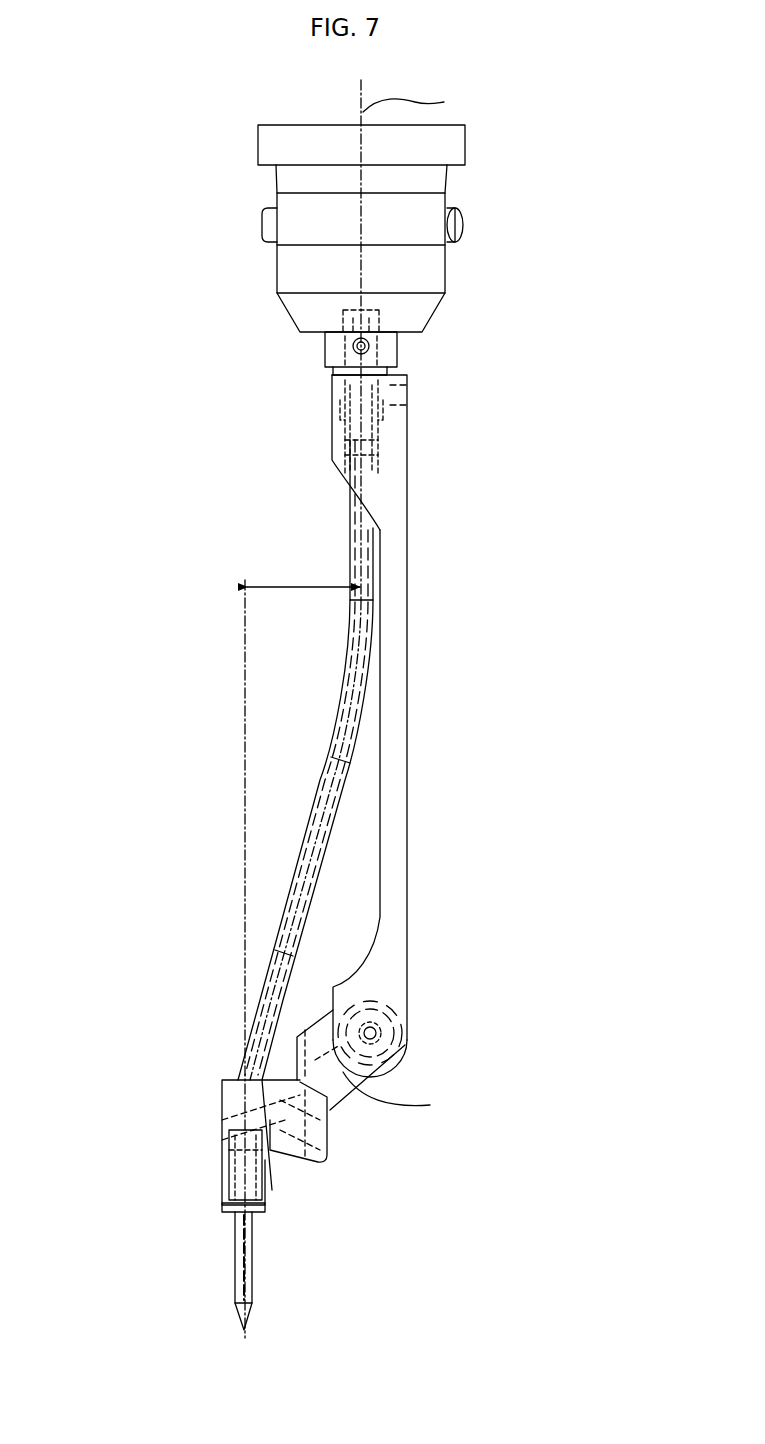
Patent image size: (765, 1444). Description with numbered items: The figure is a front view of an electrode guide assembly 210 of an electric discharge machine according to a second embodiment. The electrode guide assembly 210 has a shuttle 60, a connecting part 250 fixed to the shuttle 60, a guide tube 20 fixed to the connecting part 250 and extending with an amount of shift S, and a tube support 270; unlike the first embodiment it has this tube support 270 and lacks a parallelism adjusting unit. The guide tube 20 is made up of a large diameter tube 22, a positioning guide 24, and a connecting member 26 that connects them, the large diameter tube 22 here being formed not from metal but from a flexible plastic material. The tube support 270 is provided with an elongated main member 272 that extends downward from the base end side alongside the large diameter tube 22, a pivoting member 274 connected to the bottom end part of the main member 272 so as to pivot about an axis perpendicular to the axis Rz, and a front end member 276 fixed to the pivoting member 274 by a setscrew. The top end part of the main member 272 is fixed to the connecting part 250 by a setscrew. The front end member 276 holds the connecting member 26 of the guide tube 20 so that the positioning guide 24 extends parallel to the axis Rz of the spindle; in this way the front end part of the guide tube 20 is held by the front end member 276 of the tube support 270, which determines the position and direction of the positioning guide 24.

The electrode guide assembly 210 is at (190, 536).
The shuttle 60 is at (445, 268).
The connecting part 250 is at (405, 345).
The tube support 270 is at (413, 678).
The main member 272 is at (395, 877).
The pivoting member 274 is at (346, 1088).
The front end member 276 is at (283, 1163).
The guide tube 20 is at (347, 817).
The large diameter tube 22 is at (305, 838).
The connecting member 26 is at (232, 1152).
The positioning guide 24 is at (235, 1265).